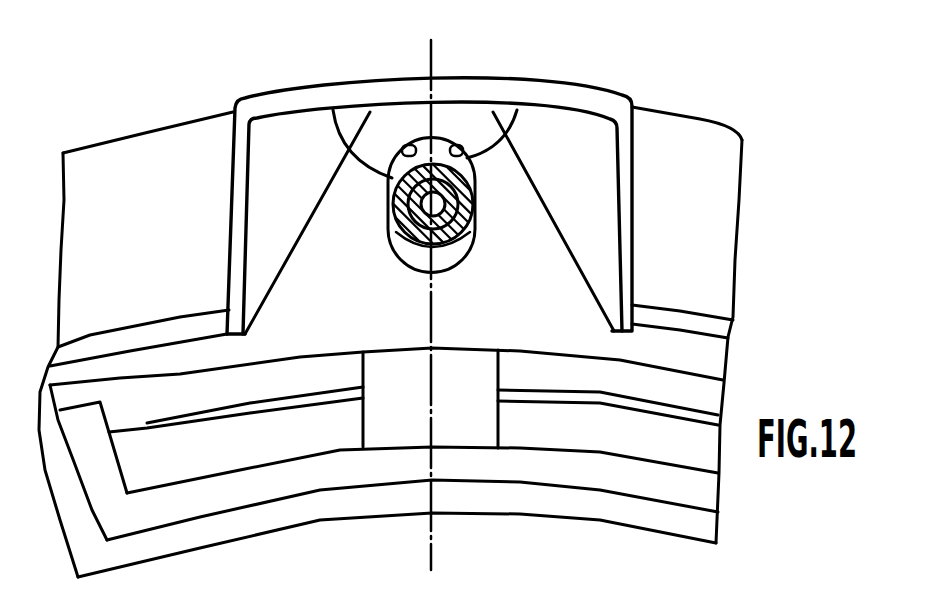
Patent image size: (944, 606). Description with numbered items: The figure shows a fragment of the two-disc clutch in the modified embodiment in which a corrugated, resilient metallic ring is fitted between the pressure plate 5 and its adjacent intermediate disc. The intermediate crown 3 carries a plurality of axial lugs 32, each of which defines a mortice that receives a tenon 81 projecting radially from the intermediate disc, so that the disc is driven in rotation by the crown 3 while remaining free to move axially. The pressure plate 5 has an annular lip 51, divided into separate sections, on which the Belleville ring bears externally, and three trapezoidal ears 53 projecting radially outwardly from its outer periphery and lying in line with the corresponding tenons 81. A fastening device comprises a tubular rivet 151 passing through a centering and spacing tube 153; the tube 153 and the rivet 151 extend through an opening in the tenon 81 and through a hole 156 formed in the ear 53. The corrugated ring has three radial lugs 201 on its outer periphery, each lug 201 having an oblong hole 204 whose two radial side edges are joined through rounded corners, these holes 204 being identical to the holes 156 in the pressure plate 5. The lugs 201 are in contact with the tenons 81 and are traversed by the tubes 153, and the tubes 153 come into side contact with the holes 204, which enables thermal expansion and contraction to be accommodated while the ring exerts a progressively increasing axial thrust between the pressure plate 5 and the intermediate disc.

The intermediate crown 3 is at (183, 100).
The pressure plate 5 is at (207, 349).
The axial lugs 32 is at (675, 147).
The annular lip 51 is at (147, 423).
The ears 53 is at (547, 187).
The tenons 81 is at (565, 84).
The tubular rivet 151 is at (333, 110).
The centering and spacing tube 153 is at (437, 167).
The hole 156 is at (428, 158).
The radial lugs 201 is at (263, 110).
The oblong hole 204 is at (517, 110).